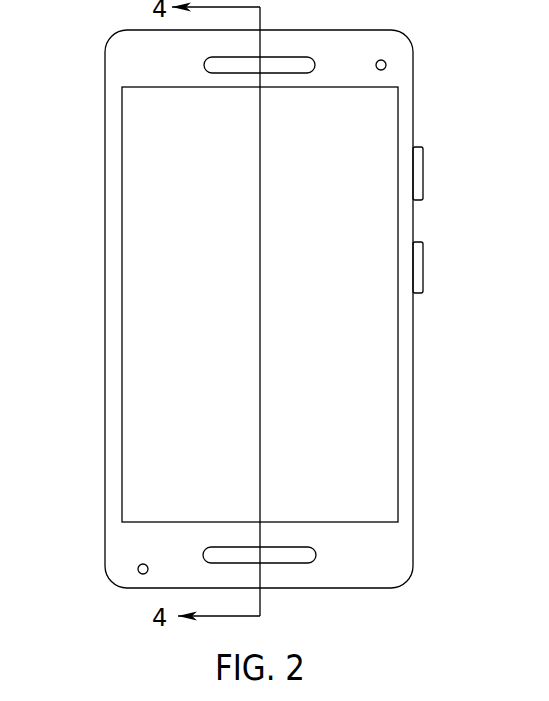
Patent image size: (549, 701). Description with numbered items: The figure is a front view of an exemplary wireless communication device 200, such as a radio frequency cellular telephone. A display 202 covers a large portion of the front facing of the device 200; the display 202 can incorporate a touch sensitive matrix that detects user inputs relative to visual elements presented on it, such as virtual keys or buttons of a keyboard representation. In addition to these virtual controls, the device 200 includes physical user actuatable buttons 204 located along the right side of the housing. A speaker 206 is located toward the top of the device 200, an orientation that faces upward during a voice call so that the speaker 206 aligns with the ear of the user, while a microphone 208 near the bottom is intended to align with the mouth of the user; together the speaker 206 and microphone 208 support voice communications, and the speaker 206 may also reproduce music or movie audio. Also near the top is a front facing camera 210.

The device 200 is at (390, 567).
The display 202 is at (152, 320).
The physical user actuatable buttons 204 is at (423, 173).
The speaker 206 is at (283, 73).
The microphone 208 is at (137, 569).
The front facing camera 210 is at (386, 65).